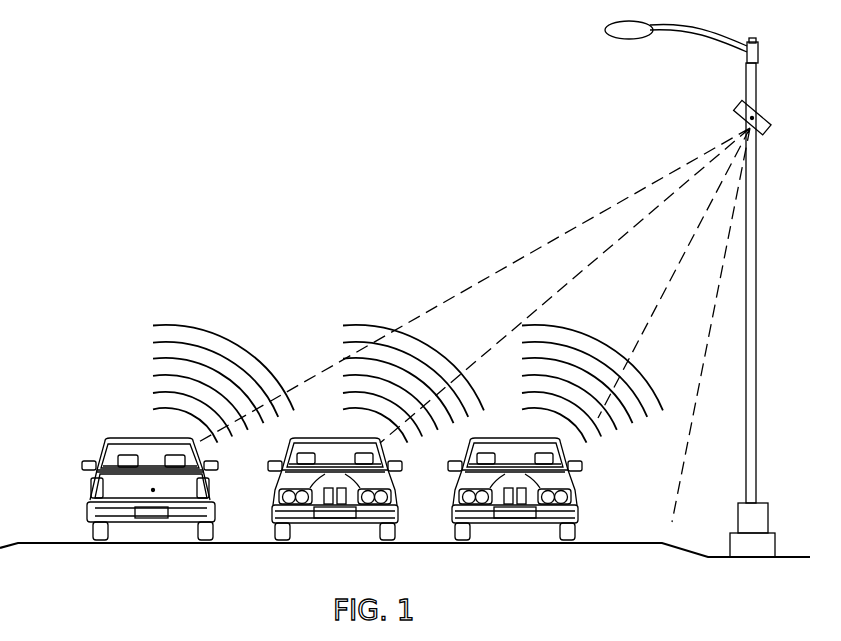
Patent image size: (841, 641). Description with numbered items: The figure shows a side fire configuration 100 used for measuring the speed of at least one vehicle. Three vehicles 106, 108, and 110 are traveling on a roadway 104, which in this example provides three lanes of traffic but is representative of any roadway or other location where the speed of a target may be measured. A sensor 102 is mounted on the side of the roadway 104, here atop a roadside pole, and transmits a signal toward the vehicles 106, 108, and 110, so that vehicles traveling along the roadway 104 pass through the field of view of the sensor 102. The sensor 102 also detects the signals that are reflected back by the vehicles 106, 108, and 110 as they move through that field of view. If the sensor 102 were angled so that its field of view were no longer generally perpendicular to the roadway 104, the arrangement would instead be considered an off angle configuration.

The side fire configuration 100 is at (232, 146).
The sensor 102 is at (745, 110).
The roadway 104 is at (425, 545).
The vehicle 106 is at (127, 438).
The vehicle 108 is at (322, 440).
The vehicle 110 is at (507, 440).